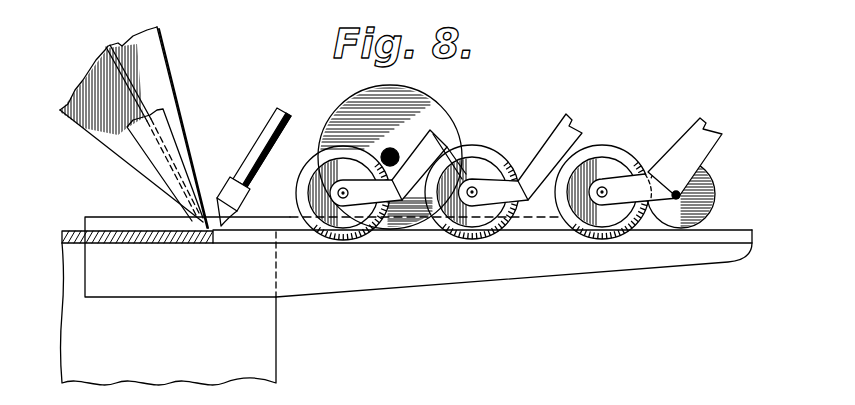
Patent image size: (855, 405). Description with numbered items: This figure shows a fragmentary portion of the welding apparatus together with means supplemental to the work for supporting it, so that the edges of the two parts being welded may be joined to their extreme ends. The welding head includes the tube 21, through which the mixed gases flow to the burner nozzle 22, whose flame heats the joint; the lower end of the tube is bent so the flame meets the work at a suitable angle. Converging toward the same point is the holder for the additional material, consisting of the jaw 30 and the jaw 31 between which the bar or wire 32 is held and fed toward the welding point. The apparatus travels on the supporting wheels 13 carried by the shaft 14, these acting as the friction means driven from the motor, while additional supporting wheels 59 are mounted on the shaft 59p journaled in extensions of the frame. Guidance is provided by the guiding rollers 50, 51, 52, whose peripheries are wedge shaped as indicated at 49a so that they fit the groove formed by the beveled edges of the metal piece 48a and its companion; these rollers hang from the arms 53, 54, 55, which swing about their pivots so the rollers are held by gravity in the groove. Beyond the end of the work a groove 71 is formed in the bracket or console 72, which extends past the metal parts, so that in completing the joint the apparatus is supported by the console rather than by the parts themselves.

The supporting wheels 13 is at (425, 103).
The shaft 14 is at (392, 148).
The tube 21 is at (279, 116).
The burner nozzle 22 is at (227, 191).
The jaw 30 is at (183, 200).
The jaw 31 is at (157, 182).
The bar or wire 32 is at (106, 49).
The metal piece 48a is at (147, 244).
The wedge shaped periphery 49a is at (640, 130).
The guiding roller 50 is at (335, 243).
The guiding roller 51 is at (458, 243).
The guiding roller 52 is at (587, 242).
The arm 53 is at (402, 232).
The arm 54 is at (573, 119).
The arm 55 is at (695, 121).
The wheels 59 is at (713, 195).
The shaft 59p is at (696, 180).
The groove 71 is at (434, 238).
The bracket or console 72 is at (518, 265).